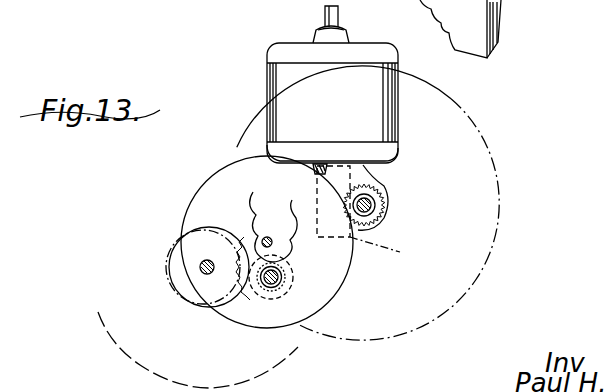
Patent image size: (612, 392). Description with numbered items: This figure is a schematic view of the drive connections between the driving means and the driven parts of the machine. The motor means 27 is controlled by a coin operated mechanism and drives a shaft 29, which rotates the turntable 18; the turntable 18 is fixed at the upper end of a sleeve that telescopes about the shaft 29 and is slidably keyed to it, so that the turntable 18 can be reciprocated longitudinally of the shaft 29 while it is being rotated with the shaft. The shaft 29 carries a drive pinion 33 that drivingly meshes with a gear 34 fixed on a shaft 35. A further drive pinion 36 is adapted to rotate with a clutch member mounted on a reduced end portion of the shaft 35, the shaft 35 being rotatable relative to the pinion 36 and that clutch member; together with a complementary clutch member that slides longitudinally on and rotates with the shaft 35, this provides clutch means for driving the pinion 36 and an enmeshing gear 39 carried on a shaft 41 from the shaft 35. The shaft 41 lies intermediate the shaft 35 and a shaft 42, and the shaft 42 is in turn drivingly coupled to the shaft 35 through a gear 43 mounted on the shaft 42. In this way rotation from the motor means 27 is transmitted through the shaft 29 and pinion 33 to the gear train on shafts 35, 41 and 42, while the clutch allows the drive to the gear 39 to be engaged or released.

The turntable 18 is at (490, 256).
The motor means 27 is at (400, 60).
The shaft 29 is at (372, 200).
The drive pinion 33 is at (380, 210).
The gear 34 is at (391, 250).
The shaft 35 is at (262, 236).
The drive pinion 36 is at (288, 240).
The gear 39 is at (300, 270).
The shaft 41 is at (278, 282).
The shaft 42 is at (204, 264).
The gear 43 is at (168, 277).